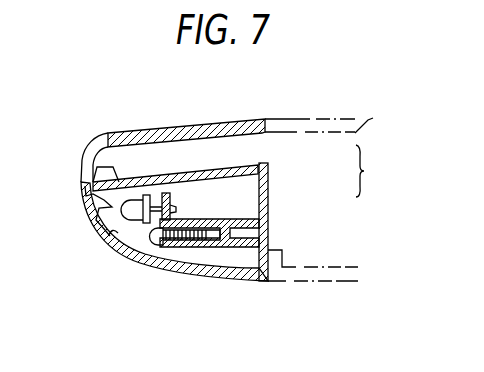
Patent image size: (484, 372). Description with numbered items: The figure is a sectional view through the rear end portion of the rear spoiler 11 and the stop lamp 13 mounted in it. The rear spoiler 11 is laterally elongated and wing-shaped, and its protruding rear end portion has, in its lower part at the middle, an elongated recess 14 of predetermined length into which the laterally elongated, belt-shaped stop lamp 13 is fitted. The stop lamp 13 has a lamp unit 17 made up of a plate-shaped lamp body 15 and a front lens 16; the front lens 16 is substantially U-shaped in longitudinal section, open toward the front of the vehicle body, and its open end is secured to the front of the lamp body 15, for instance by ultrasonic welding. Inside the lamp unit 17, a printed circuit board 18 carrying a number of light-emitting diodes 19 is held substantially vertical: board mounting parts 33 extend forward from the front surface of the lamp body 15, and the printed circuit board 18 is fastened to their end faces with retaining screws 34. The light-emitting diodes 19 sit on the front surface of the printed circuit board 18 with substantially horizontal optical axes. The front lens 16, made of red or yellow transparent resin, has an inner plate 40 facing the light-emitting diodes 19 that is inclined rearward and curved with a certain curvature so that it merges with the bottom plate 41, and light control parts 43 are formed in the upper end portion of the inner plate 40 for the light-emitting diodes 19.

The rear spoiler 11 is at (224, 122).
The stop lamp 13 is at (201, 318).
The elongated recess 14 is at (81, 183).
The lamp body 15 is at (272, 181).
The front lens 16 is at (256, 163).
The lamp unit 17 is at (370, 171).
The printed circuit board 18 is at (167, 192).
The light-emitting diodes 19 is at (132, 214).
The board mounting parts 33 is at (228, 218).
The retaining screws 34 is at (150, 236).
The inner plate 40 is at (116, 232).
The bottom plate 41 is at (228, 258).
The light control parts 43 is at (110, 167).